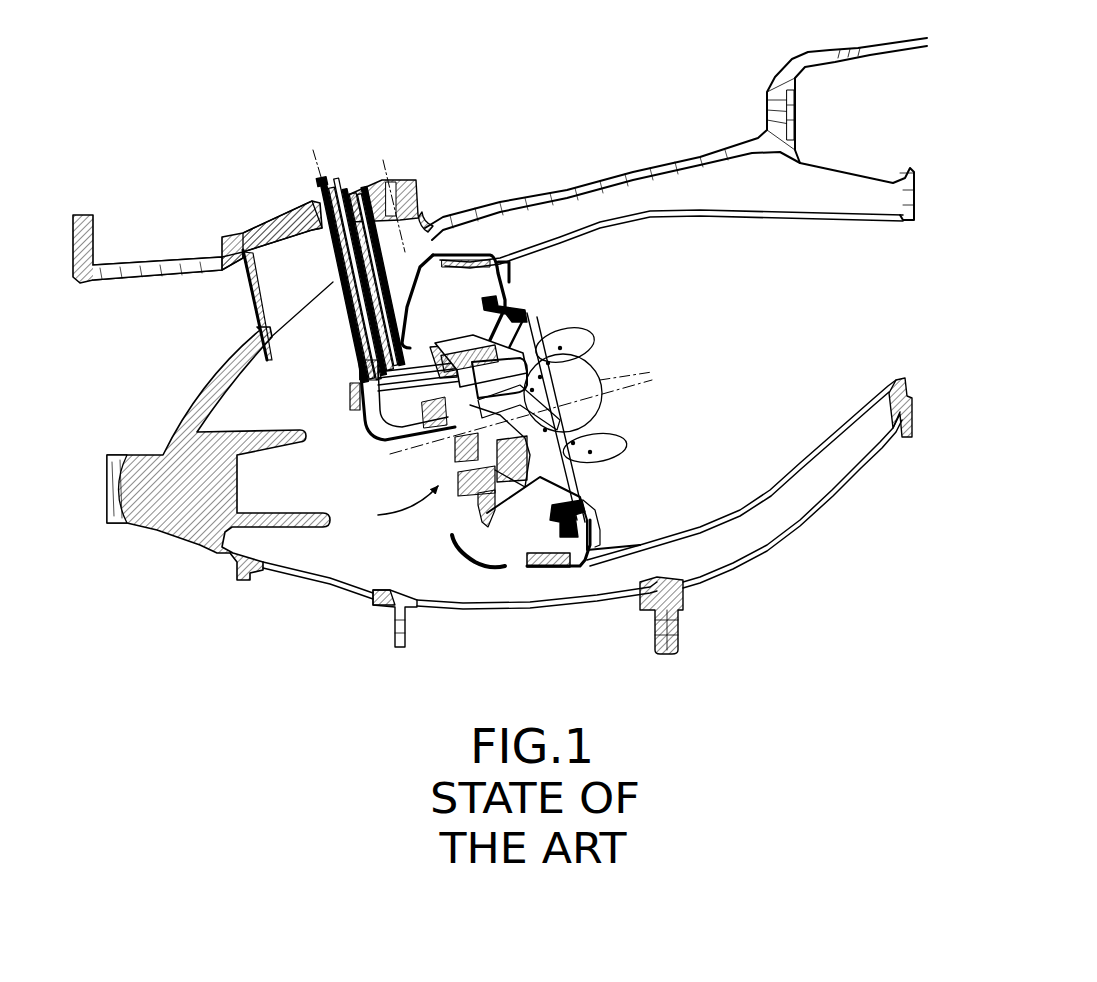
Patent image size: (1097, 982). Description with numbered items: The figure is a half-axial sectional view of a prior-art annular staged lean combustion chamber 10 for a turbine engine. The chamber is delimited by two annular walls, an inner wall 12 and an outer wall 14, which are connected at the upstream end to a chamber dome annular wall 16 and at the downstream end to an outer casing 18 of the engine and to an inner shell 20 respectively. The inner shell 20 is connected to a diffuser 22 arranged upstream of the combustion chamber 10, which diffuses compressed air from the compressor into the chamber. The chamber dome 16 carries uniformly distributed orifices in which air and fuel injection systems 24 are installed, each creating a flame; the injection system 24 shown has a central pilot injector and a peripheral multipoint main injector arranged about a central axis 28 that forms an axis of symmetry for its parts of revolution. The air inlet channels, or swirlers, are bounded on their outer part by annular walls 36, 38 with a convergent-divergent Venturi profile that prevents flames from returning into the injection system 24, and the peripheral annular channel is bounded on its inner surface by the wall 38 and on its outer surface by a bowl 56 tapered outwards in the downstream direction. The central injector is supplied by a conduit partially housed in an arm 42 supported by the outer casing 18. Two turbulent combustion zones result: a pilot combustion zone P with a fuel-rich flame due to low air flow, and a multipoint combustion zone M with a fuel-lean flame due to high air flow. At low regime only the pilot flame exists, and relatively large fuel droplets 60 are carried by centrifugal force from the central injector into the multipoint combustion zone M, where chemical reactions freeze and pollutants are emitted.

The annular staged lean combustion chamber 10 is at (757, 375).
The inner wall 12 is at (752, 500).
The outer wall 14 is at (680, 214).
The chamber dome annular wall 16 is at (592, 525).
The outer casing 18 is at (697, 157).
The inner shell 20 is at (535, 603).
The diffuser 22 is at (170, 503).
The air and fuel injection system 24 is at (393, 512).
The central axis 28 is at (640, 380).
The annular wall 36 is at (516, 443).
The annular wall 38 is at (527, 378).
The arm 42 is at (353, 342).
The bowl 56 is at (538, 340).
The fuel droplets 60 is at (560, 368).
The multipoint combustion zone M is at (577, 333).
The pilot combustion zone P is at (592, 381).